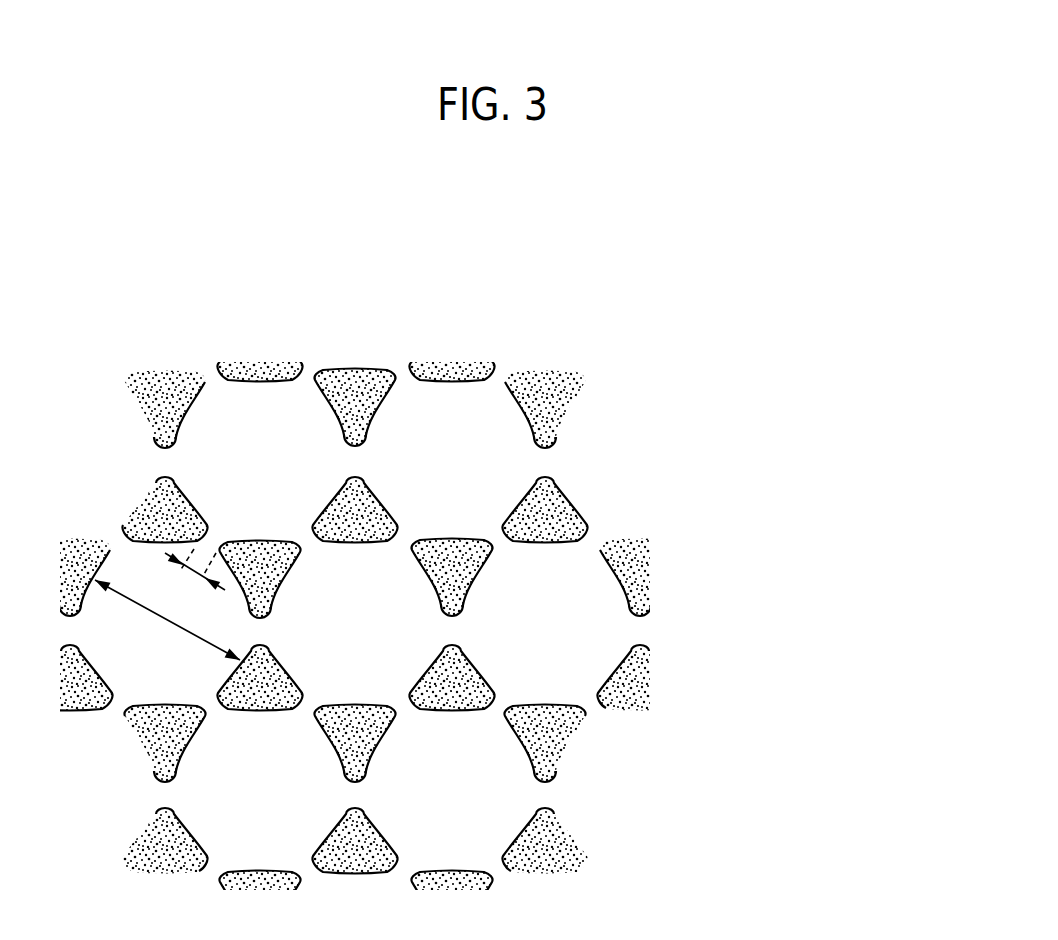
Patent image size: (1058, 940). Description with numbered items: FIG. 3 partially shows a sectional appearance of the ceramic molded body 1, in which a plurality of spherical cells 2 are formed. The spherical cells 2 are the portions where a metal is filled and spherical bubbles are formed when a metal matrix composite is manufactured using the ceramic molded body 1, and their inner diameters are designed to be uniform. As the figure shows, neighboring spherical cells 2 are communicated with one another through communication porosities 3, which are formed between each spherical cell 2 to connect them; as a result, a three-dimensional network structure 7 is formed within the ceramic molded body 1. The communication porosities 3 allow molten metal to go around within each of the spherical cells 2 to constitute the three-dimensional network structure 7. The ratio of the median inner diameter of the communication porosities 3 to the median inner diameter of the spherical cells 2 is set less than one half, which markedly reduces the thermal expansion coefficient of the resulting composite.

The ceramic molded body 1 is at (457, 306).
The spherical cell 2 is at (472, 458).
The communication porosity 3 is at (526, 540).
The three-dimensional network structure 7 is at (773, 413).